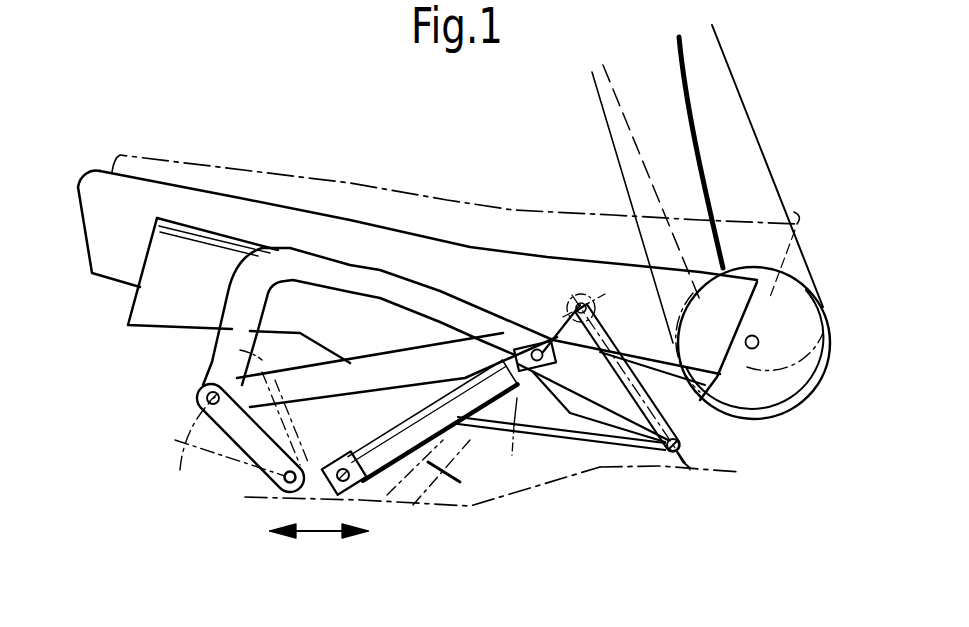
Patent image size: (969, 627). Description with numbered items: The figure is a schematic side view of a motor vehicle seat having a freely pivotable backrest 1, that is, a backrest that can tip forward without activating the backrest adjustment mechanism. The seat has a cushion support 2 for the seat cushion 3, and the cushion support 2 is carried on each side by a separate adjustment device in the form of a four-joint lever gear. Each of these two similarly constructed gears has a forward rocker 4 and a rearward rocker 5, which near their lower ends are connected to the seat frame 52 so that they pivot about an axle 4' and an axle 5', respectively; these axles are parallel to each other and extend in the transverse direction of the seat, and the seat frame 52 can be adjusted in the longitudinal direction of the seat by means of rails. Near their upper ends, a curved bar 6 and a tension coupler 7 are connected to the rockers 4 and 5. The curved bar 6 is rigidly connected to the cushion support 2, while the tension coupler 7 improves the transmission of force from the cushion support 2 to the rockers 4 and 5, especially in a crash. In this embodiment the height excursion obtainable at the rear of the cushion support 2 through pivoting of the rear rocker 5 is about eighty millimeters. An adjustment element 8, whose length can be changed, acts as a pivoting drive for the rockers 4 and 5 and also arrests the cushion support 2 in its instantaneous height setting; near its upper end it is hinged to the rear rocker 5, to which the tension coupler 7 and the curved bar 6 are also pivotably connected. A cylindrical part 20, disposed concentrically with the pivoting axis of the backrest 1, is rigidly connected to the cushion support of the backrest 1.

The backrest 1 is at (730, 72).
The cushion support 2 is at (163, 295).
The seat cushion 3 is at (107, 238).
The forward rocker 4 is at (177, 433).
The axle 4' is at (408, 519).
The rearward rocker 5 is at (626, 430).
The axle 5' is at (673, 502).
The curved bar 6 is at (322, 272).
The tension coupler 7 is at (398, 378).
The adjustment element 8 is at (443, 437).
The cylindrical part 20 is at (783, 388).
The seat frame 52 is at (605, 463).